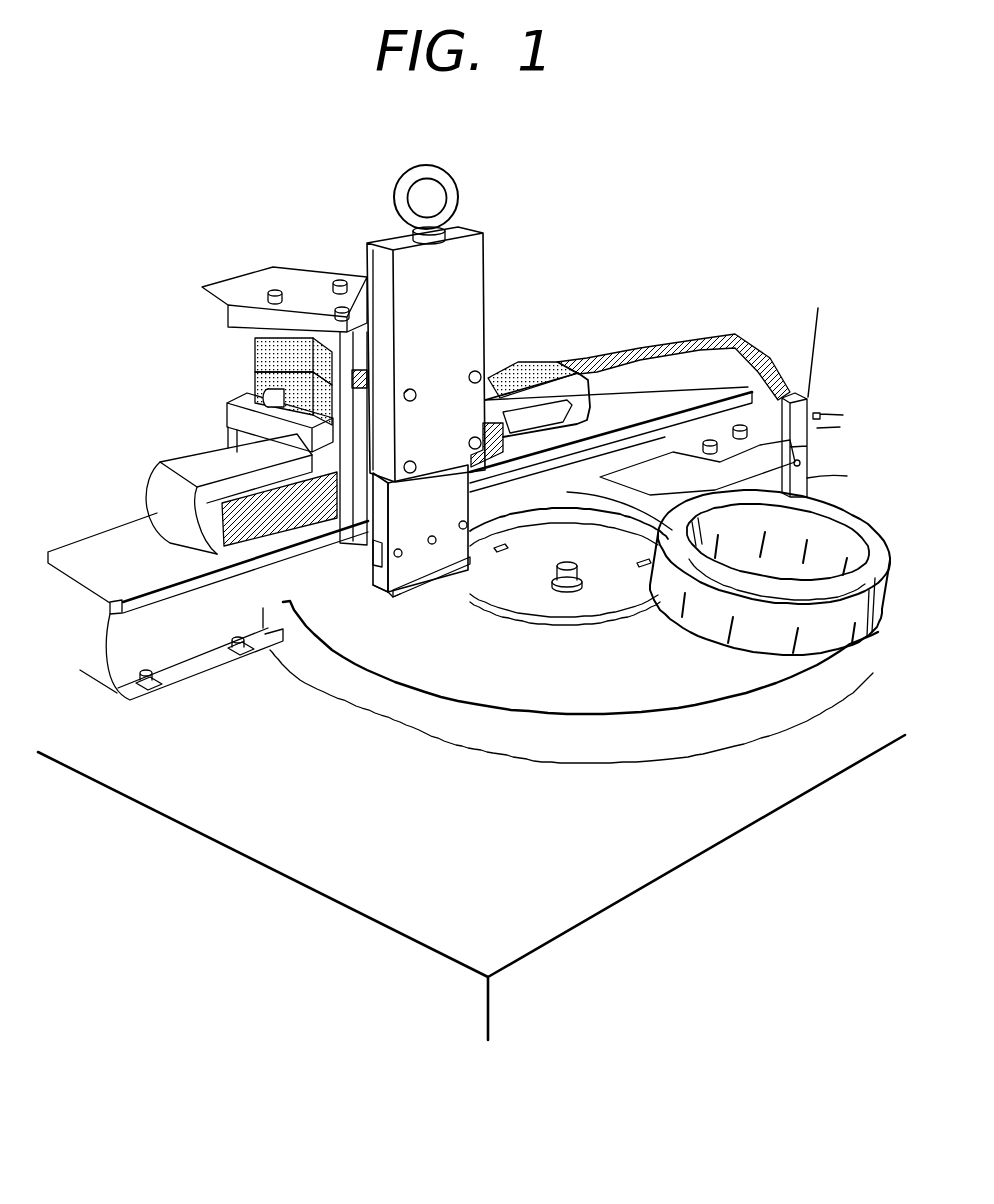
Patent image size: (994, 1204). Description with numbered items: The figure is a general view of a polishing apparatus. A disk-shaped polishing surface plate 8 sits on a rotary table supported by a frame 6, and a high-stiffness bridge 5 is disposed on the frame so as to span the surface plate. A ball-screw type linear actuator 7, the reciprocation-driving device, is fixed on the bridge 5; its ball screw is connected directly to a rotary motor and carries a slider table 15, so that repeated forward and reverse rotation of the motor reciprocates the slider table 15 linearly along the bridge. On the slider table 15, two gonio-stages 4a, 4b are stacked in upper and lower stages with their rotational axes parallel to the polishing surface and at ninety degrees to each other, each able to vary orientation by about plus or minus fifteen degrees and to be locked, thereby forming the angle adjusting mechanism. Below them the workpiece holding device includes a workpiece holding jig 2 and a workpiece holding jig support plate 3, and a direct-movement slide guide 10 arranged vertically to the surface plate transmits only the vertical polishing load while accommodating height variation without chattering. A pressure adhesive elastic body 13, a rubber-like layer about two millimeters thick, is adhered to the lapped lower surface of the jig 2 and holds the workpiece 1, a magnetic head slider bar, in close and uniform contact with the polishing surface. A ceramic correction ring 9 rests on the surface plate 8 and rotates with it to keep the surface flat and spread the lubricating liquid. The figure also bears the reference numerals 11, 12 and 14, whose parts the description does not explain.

The workpiece 1 is at (375, 588).
The workpiece holding jig 2 is at (427, 565).
The workpiece holding jig support plate 3 is at (435, 518).
The gonio-stage 4a is at (258, 386).
The gonio-stage 4b is at (267, 358).
The bridge 5 is at (202, 612).
The frame 6 is at (555, 900).
The linear actuator 7 is at (185, 462).
The polishing surface plate 8 is at (583, 670).
The correction ring 9 is at (857, 527).
The direct-movement slide guide 10 is at (414, 396).
The housing block 11 is at (458, 293).
The eyebolt 12 is at (448, 210).
The pressure adhesive elastic body 13 is at (402, 590).
The top plate 14 is at (238, 315).
The slider table 15 is at (233, 416).